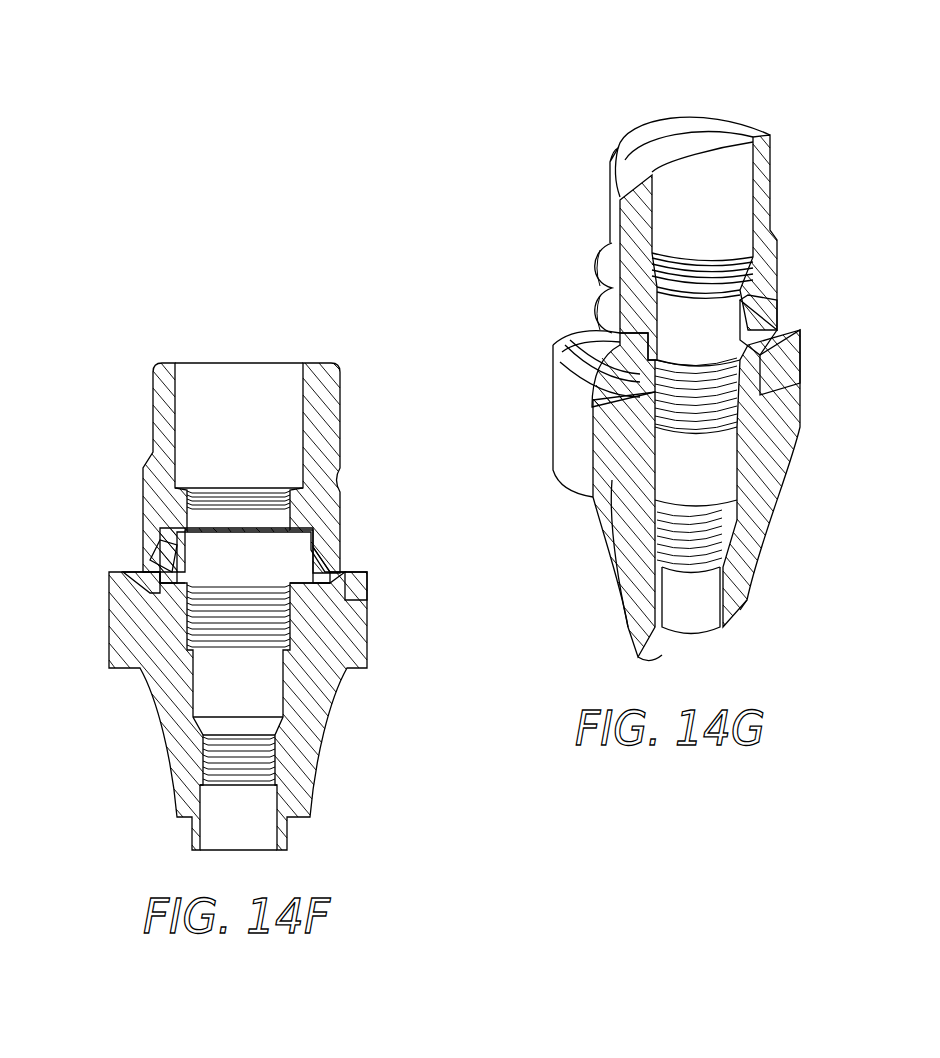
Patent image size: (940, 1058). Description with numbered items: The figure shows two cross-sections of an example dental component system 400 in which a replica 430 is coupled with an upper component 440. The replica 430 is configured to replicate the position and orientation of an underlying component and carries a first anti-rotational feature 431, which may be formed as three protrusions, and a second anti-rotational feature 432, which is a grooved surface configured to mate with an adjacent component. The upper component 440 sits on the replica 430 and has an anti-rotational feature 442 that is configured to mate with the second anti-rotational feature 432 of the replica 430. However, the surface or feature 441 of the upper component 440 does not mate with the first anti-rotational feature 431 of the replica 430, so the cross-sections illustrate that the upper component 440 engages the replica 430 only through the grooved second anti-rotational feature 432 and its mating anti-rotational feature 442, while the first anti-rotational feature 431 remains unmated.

In FIG. 14F, the dental components and/or systems 400 is at (343, 311).
In FIG. 14G, the dental components and/or systems 400 is at (809, 112).
In FIG. 14F, the replica 430 is at (320, 720).
In FIG. 14G, the replica 430 is at (755, 495).
In FIG. 14F, the first anti-rotational feature 431 is at (122, 596).
In FIG. 14G, the first anti-rotational feature 431 is at (590, 407).
In FIG. 14F, the second anti-rotational feature 432 is at (372, 586).
In FIG. 14G, the second anti-rotational feature 432 is at (800, 352).
In FIG. 14F, the upper component 440 is at (343, 474).
In FIG. 14G, the upper component 440 is at (778, 268).
In FIG. 14F, the surface/feature 441 is at (160, 541).
In FIG. 14G, the surface/feature 441 is at (597, 402).
In FIG. 14F, the anti-rotational feature 442 is at (350, 572).
In FIG. 14G, the anti-rotational feature 442 is at (800, 340).